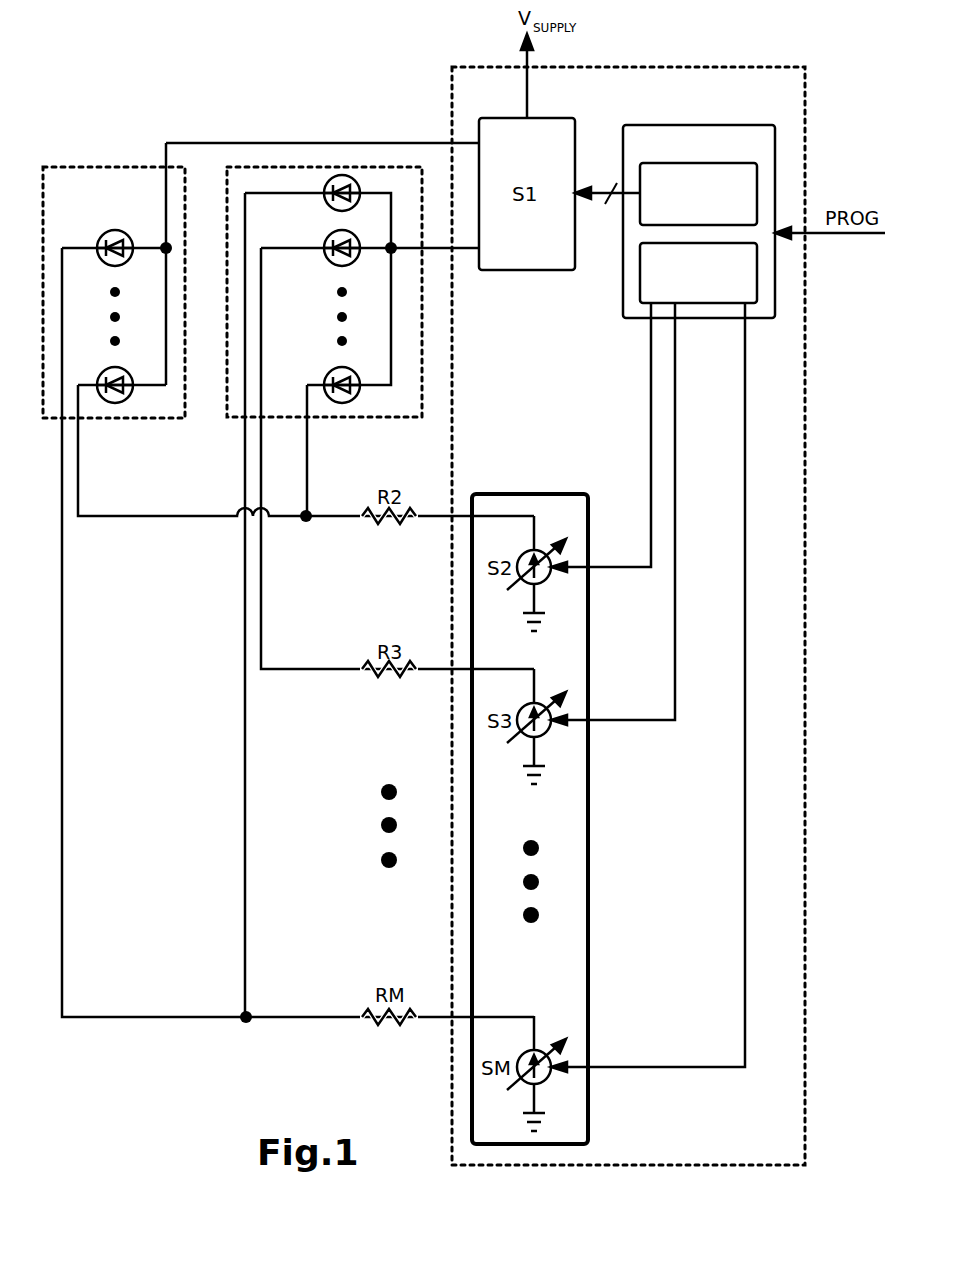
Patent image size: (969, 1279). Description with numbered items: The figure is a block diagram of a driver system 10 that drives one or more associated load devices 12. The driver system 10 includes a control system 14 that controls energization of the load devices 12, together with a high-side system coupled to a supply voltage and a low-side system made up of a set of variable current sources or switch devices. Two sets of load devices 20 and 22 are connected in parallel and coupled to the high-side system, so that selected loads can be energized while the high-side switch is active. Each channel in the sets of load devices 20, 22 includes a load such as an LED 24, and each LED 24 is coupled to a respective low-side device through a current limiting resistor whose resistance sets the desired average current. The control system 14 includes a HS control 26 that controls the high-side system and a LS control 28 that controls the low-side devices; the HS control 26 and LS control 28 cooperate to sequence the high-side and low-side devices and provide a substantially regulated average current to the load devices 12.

The driver system 10 is at (450, 118).
The load devices 12 is at (225, 125).
The control system 14 is at (643, 126).
The set of load devices 20 is at (345, 418).
The set of load devices 22 is at (115, 418).
The LED 24 is at (107, 369).
The HS control 26 is at (757, 188).
The LS control 28 is at (757, 265).